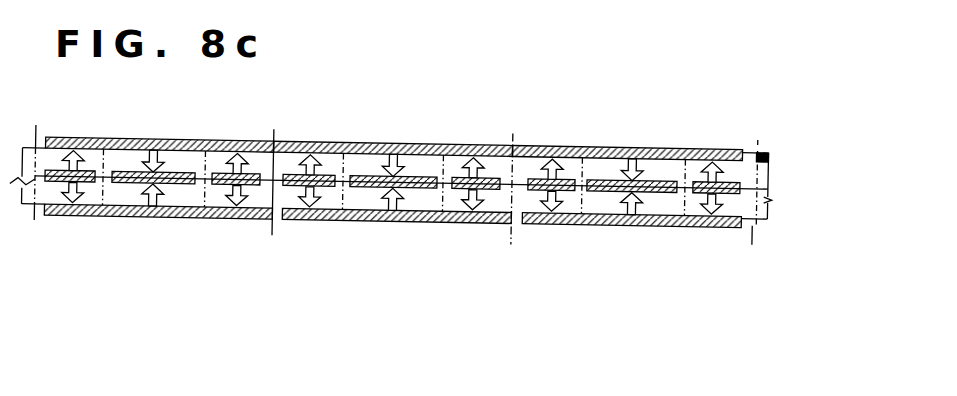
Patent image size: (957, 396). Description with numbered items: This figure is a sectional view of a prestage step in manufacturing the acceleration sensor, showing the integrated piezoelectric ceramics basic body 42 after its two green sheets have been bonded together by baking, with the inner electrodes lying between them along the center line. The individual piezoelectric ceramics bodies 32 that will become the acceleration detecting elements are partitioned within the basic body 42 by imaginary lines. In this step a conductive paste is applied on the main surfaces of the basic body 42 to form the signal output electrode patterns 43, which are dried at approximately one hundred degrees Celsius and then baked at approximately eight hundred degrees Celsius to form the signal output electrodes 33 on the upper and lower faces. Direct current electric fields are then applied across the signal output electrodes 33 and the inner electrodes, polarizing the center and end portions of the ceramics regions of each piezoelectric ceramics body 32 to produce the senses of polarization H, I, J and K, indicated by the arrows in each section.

The piezoelectric ceramics body 32 is at (323, 141).
The signal output electrode pattern 43 is at (393, 186).
The signal output electrode 33 is at (375, 143).
The piezoelectric ceramics basic body 42 is at (768, 180).
The sense of polarization H is at (396, 158).
The sense of polarization I is at (493, 178).
The sense of polarization J is at (400, 196).
The sense of polarization K is at (485, 196).